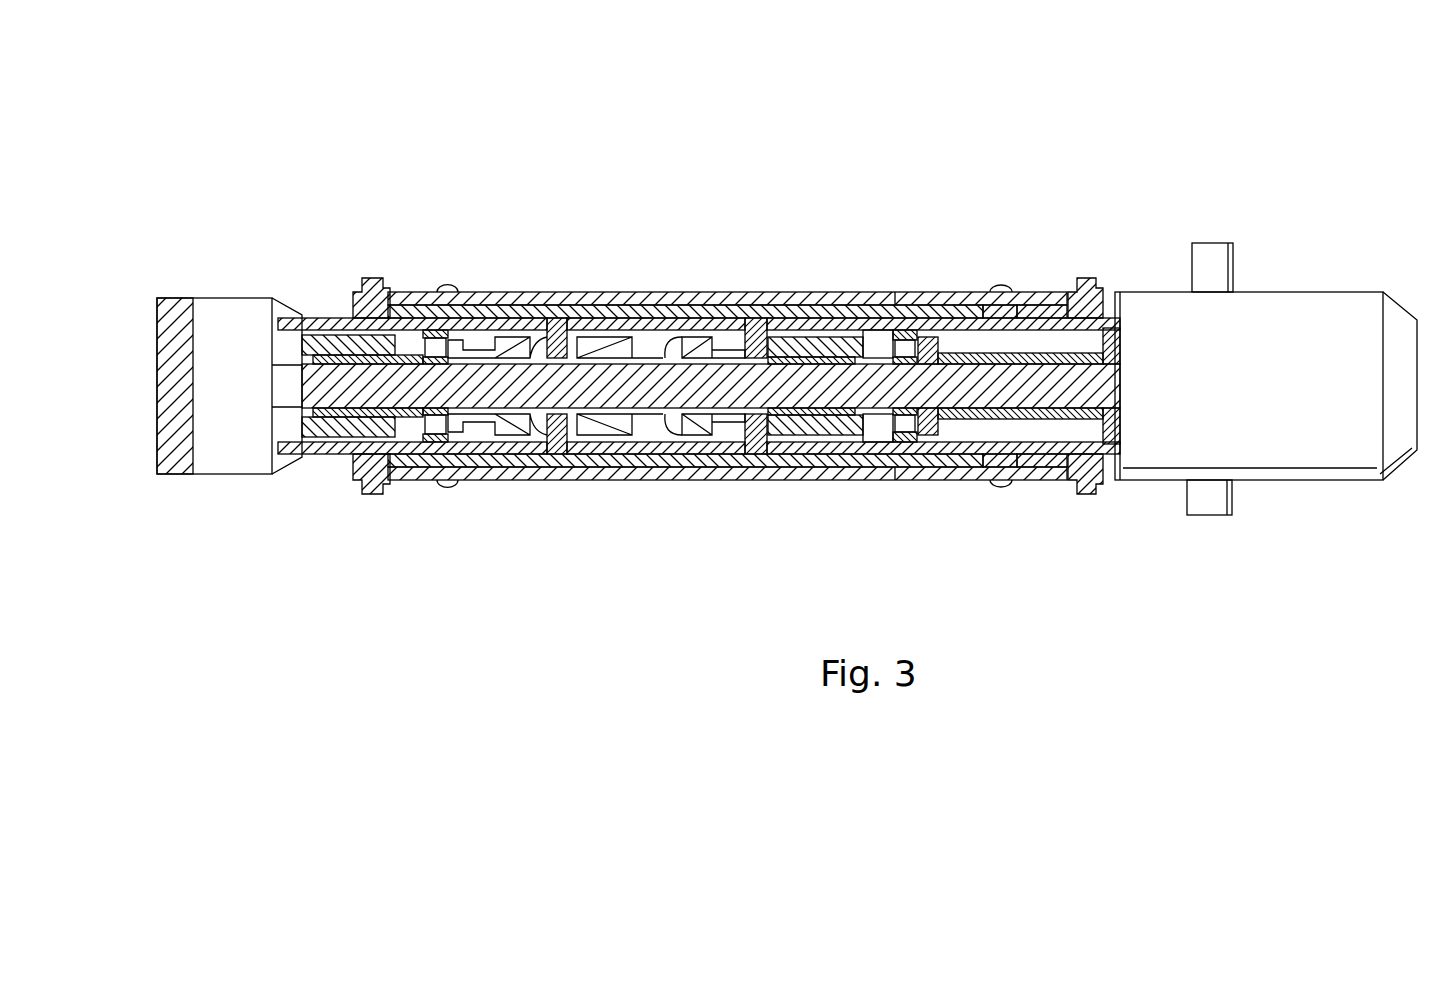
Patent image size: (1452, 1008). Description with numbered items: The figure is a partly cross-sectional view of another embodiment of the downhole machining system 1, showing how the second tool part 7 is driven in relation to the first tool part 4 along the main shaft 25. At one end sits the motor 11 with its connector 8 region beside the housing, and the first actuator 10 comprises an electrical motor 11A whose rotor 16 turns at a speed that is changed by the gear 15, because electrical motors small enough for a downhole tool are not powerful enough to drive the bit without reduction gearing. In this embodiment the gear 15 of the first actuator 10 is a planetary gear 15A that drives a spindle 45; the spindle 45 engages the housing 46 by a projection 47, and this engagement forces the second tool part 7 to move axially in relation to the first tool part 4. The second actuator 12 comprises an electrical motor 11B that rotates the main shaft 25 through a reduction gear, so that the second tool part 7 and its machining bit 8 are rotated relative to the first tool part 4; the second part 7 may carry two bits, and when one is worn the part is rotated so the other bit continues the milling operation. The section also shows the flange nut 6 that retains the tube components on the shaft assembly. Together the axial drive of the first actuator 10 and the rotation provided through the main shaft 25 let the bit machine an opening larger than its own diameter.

The actuator device 1 is at (1242, 108).
The first tool part 4 is at (868, 470).
The flange nut 6 is at (1085, 293).
The second tool part 7 is at (1308, 308).
The machining bit 8 is at (1215, 262).
The first actuator 10 is at (380, 248).
The motor 11 is at (222, 322).
The electrical motor 11A is at (332, 337).
The electrical motor 11B is at (813, 340).
The second actuator 12 is at (875, 275).
The gear 15 is at (443, 337).
The planetary gear 15A is at (428, 340).
The rotor 16 is at (325, 440).
The main shaft 25 is at (723, 380).
The spindle 45 is at (602, 340).
The housing 46 is at (683, 340).
The projection 47 is at (547, 340).